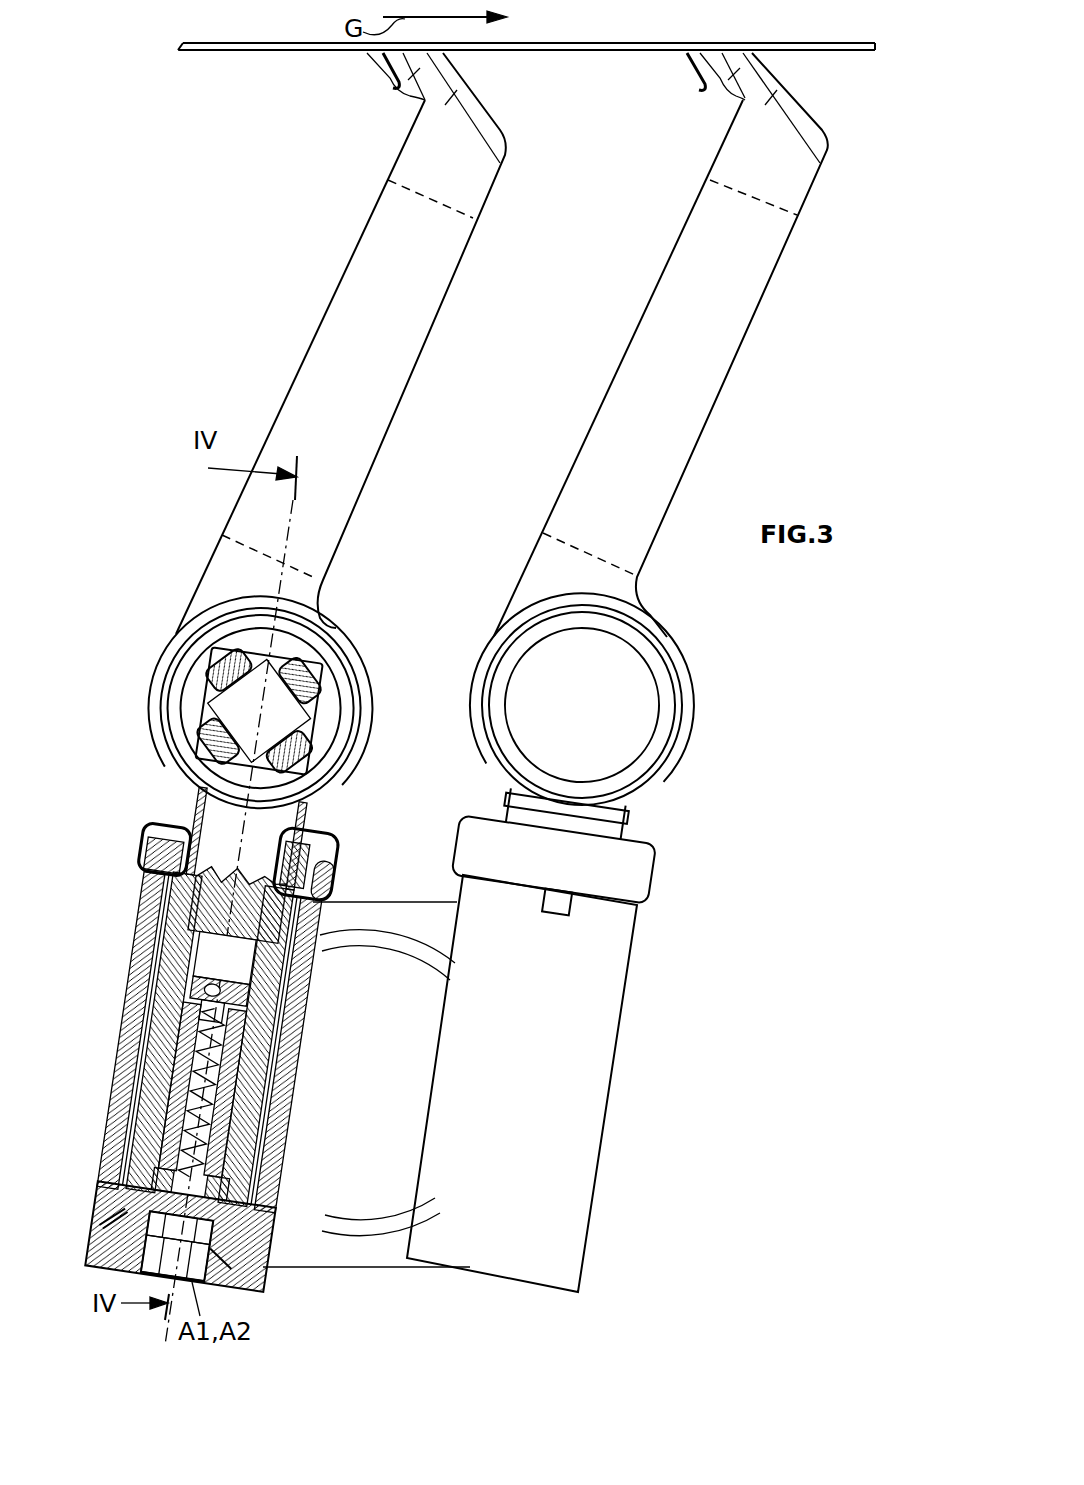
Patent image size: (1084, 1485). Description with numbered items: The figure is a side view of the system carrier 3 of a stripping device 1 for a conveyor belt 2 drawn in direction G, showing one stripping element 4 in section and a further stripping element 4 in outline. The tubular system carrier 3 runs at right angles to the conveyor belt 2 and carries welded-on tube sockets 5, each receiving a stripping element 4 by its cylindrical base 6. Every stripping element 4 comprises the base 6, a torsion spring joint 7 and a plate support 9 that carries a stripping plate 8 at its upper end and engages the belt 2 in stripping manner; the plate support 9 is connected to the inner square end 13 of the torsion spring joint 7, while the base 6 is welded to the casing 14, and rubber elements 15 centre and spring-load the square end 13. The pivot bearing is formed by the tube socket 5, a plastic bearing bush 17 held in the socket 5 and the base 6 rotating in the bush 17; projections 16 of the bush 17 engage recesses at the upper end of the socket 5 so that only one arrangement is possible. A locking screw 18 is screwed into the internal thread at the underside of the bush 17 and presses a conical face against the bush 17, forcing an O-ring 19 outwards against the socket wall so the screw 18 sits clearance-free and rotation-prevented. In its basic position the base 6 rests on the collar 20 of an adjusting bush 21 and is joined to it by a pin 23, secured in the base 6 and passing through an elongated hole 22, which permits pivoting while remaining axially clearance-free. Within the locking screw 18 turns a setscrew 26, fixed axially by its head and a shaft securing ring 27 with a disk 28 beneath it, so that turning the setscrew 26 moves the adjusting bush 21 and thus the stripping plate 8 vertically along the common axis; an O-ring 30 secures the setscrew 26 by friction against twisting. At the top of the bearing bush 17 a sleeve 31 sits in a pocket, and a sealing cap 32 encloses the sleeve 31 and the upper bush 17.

The stripping device 1 is at (660, 1100).
The conveyor belt 2 is at (620, 52).
The system carrier 3 is at (388, 920).
The stripping element 4 is at (502, 345).
The tube socket 5 is at (145, 918).
The base 6 is at (192, 792).
The torsion spring joint 7 is at (222, 702).
The stripping plate 8 is at (427, 102).
The plate support 9 is at (368, 228).
The square end 13 is at (210, 660).
The casing 14 is at (332, 757).
The rubber elements 15 is at (318, 662).
The projection 16 is at (158, 845).
The bearing bush 17 is at (163, 882).
The locking screw 18 is at (107, 1273).
The O-ring 19 is at (268, 1278).
The collar 20 is at (165, 1150).
The adjusting bush 21 is at (165, 1025).
The elongated hole 22 is at (215, 958).
The pin 23 is at (200, 992).
The setscrew 26 is at (120, 1223).
The shaft securing ring 27 is at (160, 1173).
The disk 28 is at (180, 1205).
The O-ring 30 is at (225, 1285).
The sleeve 31 is at (312, 815).
The sealing cap 32 is at (342, 880).